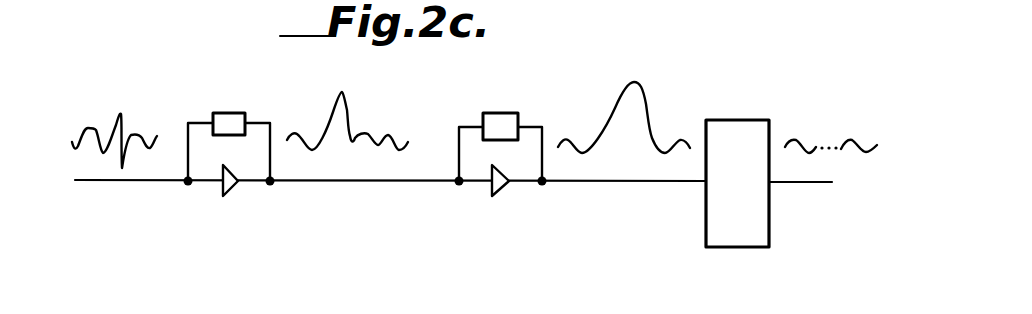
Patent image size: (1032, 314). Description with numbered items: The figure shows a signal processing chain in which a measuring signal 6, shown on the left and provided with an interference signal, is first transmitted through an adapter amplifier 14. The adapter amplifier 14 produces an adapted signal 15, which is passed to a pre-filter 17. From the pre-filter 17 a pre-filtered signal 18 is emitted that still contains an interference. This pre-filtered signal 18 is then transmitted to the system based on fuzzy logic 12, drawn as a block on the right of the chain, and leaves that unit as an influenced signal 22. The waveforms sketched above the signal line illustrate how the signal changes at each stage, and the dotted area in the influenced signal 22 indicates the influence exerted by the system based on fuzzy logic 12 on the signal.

The measuring signal 6 is at (150, 181).
The adapter amplifier 14 is at (318, 113).
The adapted signal 15 is at (322, 181).
The pre-filter 17 is at (590, 118).
The pre-filtered signal 18 is at (603, 181).
The system based on fuzzy logic 12 is at (733, 214).
The influenced signal 22 is at (813, 148).